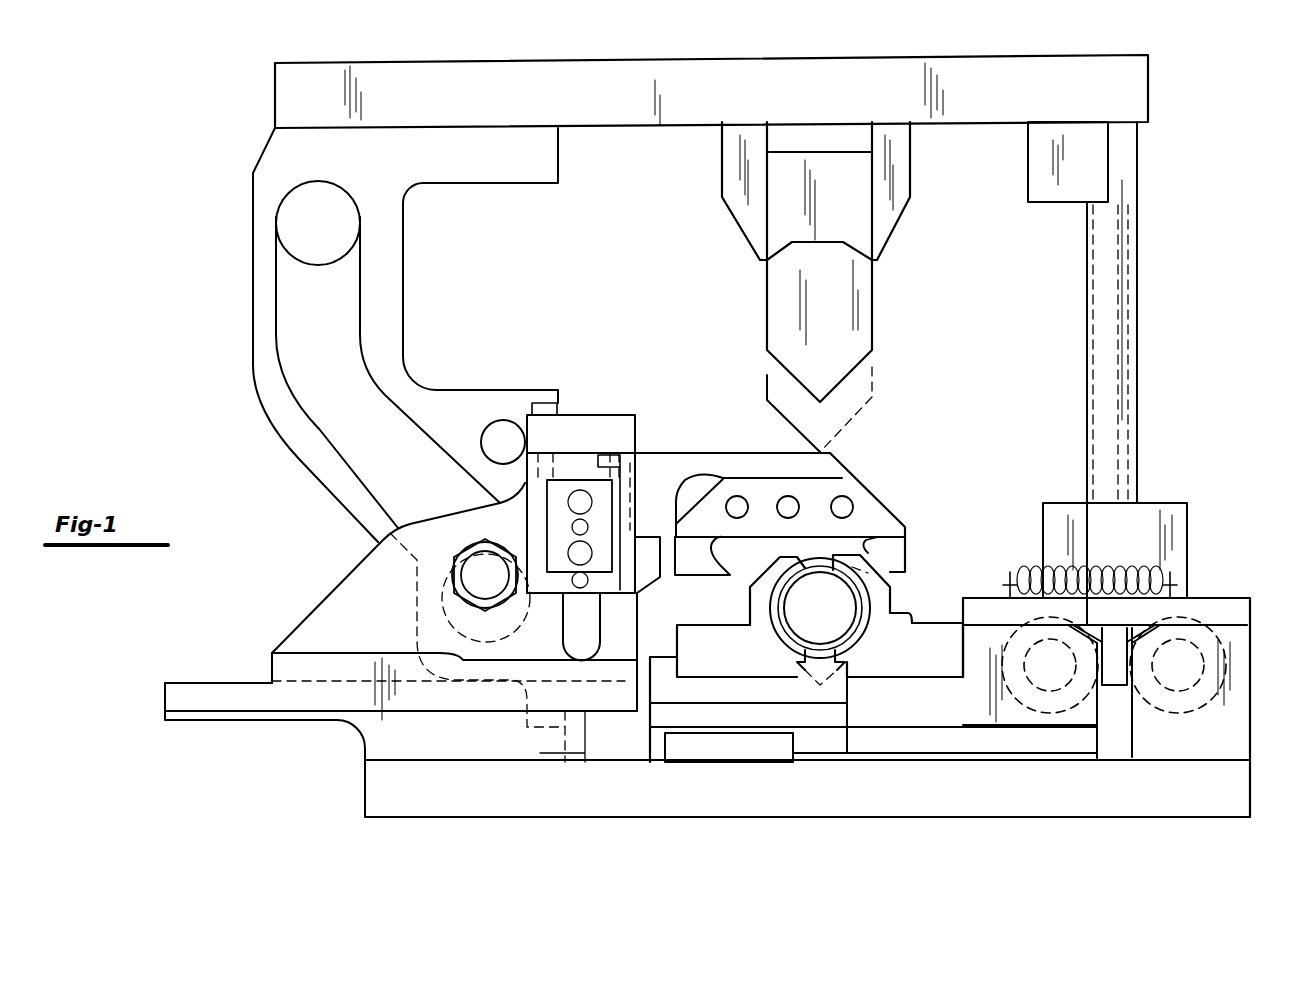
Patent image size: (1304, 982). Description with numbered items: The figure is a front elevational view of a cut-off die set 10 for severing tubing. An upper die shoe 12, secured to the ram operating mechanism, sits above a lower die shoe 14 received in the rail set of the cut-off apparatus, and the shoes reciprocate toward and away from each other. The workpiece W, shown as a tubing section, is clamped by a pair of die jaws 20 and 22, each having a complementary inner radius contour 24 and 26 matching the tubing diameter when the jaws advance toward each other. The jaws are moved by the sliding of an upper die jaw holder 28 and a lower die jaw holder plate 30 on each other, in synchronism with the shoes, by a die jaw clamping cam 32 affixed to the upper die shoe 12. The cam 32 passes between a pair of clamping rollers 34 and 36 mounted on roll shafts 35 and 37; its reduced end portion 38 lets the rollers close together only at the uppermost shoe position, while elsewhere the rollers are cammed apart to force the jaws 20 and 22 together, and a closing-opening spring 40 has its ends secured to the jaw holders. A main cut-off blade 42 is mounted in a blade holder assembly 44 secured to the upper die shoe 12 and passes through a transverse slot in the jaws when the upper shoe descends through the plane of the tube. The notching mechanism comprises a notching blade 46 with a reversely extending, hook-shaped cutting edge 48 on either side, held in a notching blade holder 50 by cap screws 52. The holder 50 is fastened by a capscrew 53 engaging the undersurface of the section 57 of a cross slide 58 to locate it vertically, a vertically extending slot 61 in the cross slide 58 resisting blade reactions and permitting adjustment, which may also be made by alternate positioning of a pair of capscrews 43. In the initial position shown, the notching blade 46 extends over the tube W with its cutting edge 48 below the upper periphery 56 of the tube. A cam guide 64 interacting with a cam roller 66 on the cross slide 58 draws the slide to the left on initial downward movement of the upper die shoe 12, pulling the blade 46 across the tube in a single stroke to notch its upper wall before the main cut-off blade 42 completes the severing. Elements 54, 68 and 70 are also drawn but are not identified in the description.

The die set 10 is at (222, 316).
The upper die shoe 12 is at (275, 98).
The lower die shoe 14 is at (355, 816).
The die jaw 20 is at (745, 610).
The die jaw 22 is at (893, 625).
The inner radius contour 24 is at (770, 590).
The inner radius contour 26 is at (848, 628).
The upper die jaw holder 28 is at (650, 700).
The lower die jaw holder plate 30 is at (845, 715).
The die jaw clamping cam 32 is at (1130, 330).
The clamping roller 34 is at (1045, 712).
The roll shaft 35 is at (1072, 710).
The clamping roller 36 is at (1232, 668).
The roll shaft 37 is at (1200, 625).
The reduced end portion 38 is at (1115, 692).
The closing-opening spring 40 is at (1040, 575).
The main cut-off blade 42 is at (873, 332).
The capscrews 43 is at (568, 553).
The blade holder assembly 44 is at (900, 220).
The notching blade 46 is at (905, 527).
The cutting edge 48 is at (700, 540).
The notching blade holder 50 is at (737, 496).
The cap screws 52 is at (788, 496).
The capscrew 53 is at (616, 450).
The clamp jaw 54 is at (880, 582).
The upper periphery 56 is at (822, 572).
The section 57 is at (628, 588).
The cross slide 58 is at (310, 610).
The slot 61 is at (577, 638).
The cam guide 64 is at (262, 400).
The cam roller 66 is at (470, 610).
The nut 68 is at (448, 575).
The hole 70 is at (292, 268).
The workpiece W is at (792, 626).